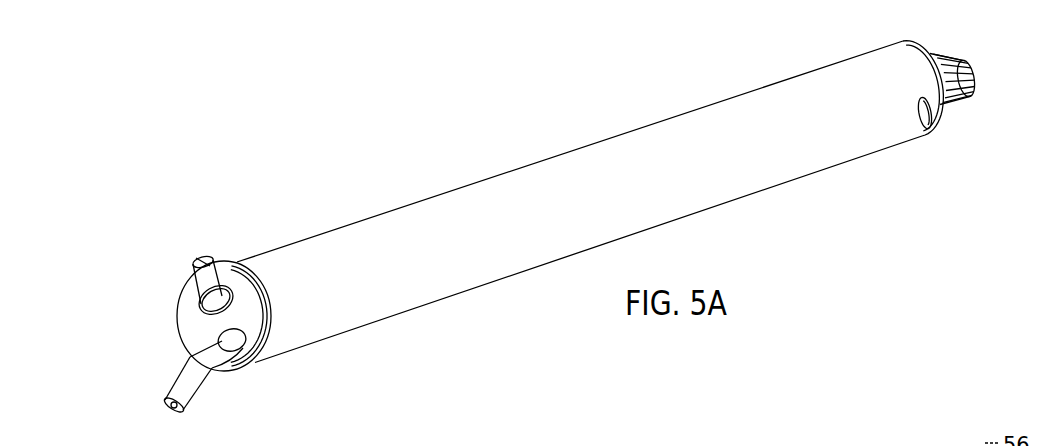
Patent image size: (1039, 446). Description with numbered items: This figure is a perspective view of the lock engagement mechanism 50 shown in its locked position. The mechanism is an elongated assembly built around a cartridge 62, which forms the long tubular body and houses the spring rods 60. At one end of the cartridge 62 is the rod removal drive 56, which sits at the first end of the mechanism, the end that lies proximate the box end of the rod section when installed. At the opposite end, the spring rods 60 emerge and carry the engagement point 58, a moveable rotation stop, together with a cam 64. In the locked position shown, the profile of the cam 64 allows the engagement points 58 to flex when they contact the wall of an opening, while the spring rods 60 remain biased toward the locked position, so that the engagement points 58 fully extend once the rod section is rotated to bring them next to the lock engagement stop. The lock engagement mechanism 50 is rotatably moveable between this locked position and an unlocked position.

The lock engagement mechanism 50 is at (427, 143).
The rod removal drive 56 is at (955, 53).
The engagement point 58 is at (195, 258).
The spring rods 60 is at (208, 352).
The cartridge 62 is at (588, 143).
The cam 64 is at (198, 305).